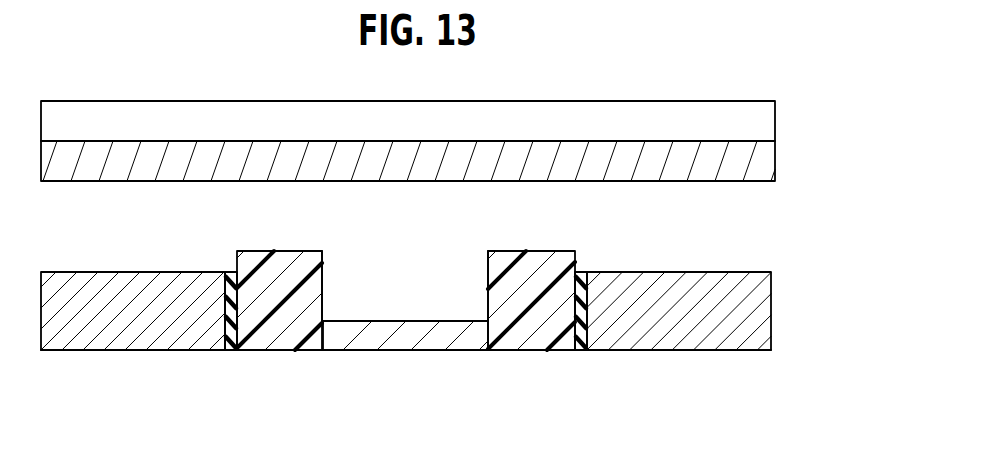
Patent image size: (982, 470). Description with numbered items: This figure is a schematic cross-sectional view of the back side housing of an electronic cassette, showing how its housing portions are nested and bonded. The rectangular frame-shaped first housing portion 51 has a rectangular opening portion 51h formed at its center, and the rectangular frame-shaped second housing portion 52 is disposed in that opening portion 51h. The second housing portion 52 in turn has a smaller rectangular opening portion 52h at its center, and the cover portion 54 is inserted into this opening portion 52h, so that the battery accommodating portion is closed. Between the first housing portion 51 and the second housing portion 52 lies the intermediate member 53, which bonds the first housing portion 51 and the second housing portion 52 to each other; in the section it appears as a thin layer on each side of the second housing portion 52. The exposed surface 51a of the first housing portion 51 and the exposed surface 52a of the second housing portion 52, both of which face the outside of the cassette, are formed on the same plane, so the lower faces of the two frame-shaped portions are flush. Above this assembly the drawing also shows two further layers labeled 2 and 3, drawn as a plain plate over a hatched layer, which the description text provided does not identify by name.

The light transmitting plate 2 is at (772, 118).
The adhesive layer 3 is at (772, 165).
The first housing portion 51 is at (127, 342).
The exposed surface 51a is at (202, 350).
The opening portion 51h is at (235, 347).
The second housing portion 52 is at (317, 258).
The exposed surface 52a is at (270, 350).
The opening portion 52h is at (325, 293).
The intermediate member 53 is at (232, 272).
The cover portion 54 is at (410, 338).